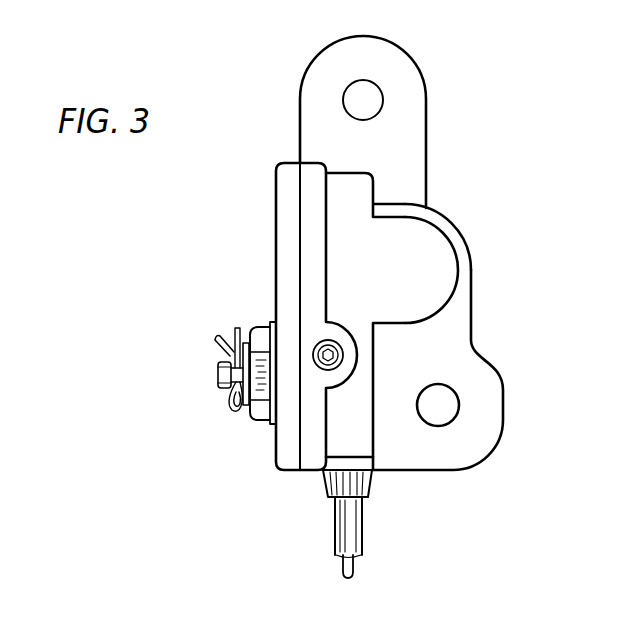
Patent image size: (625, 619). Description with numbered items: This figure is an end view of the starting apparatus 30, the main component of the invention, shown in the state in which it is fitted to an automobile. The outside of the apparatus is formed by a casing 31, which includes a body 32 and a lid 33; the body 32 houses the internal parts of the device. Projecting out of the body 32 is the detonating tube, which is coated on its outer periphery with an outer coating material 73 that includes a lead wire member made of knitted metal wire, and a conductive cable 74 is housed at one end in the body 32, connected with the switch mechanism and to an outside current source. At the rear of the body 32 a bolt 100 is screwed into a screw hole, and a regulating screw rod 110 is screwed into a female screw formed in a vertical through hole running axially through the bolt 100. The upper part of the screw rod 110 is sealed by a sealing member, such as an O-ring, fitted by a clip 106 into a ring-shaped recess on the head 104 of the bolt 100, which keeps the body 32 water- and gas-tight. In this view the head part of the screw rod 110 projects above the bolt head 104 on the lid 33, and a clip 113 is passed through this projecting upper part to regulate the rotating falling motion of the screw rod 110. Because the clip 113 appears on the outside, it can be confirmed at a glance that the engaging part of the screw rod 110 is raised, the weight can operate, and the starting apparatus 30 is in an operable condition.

The starting apparatus 30 is at (431, 253).
The casing 31 is at (423, 279).
The body 32 is at (353, 187).
The lid 33 is at (284, 222).
The outer coating material 73 is at (356, 526).
The conductive cable 74 is at (356, 565).
The bolt 100 is at (263, 344).
The head of bolt 104 is at (268, 420).
The clip 106 is at (243, 376).
The regulating screw rod 110 is at (218, 371).
The clip 113 is at (228, 411).